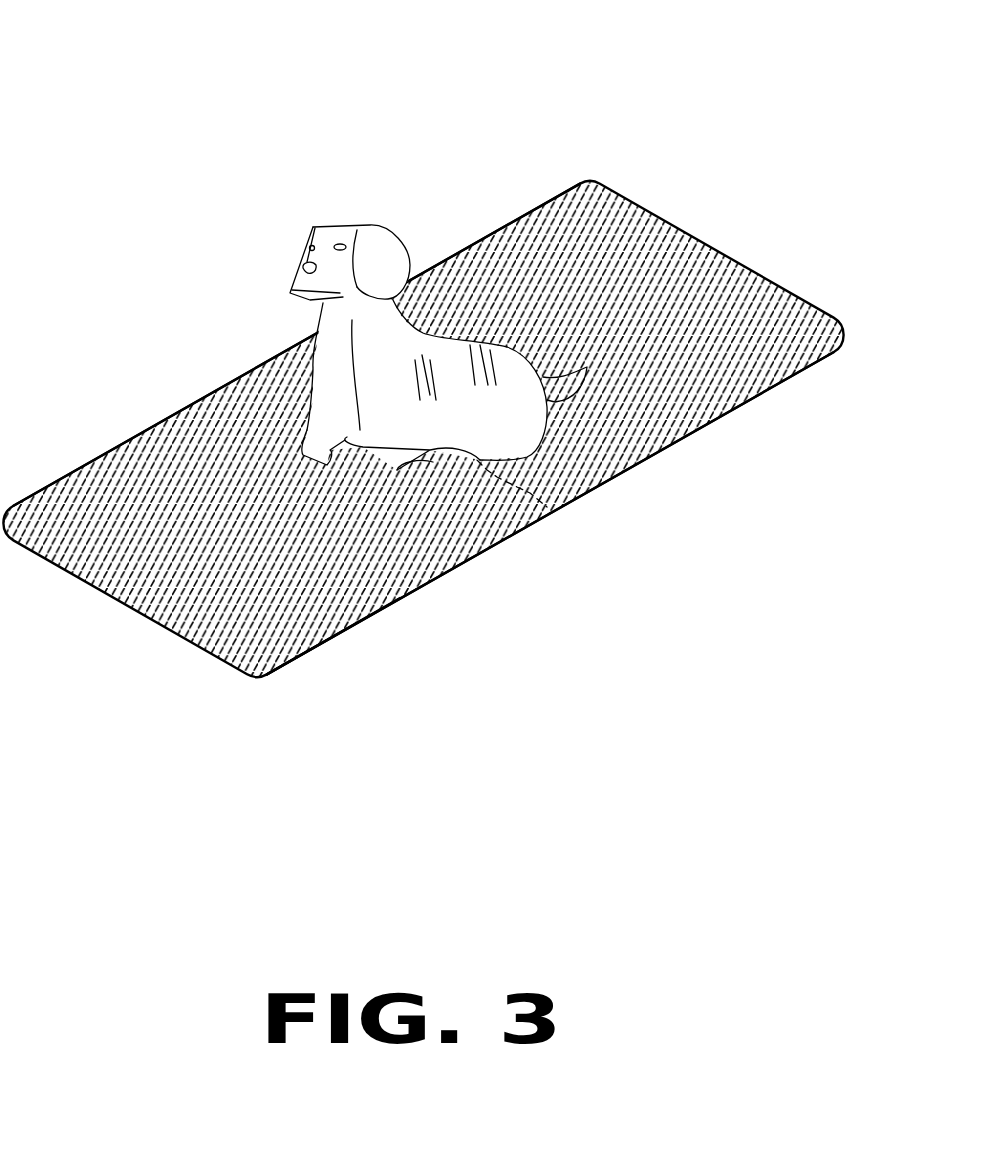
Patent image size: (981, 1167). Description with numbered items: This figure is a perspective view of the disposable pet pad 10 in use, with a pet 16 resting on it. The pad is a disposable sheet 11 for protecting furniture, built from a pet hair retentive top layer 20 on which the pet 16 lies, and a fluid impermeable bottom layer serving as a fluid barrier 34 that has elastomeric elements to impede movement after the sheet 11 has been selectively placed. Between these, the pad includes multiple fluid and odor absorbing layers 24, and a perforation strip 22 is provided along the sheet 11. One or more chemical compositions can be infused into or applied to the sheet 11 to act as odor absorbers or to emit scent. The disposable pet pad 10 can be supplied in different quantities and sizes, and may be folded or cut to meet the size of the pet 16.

The disposable pet pad 10 is at (423, 380).
The disposable sheet 11 is at (133, 613).
The pet 16 is at (348, 225).
The pet hair retentive top layer 20 is at (73, 493).
The perforation strip 22 is at (293, 355).
The multiple fluid and odor absorbing layers 24 is at (583, 497).
The fluid barrier 34 is at (347, 630).